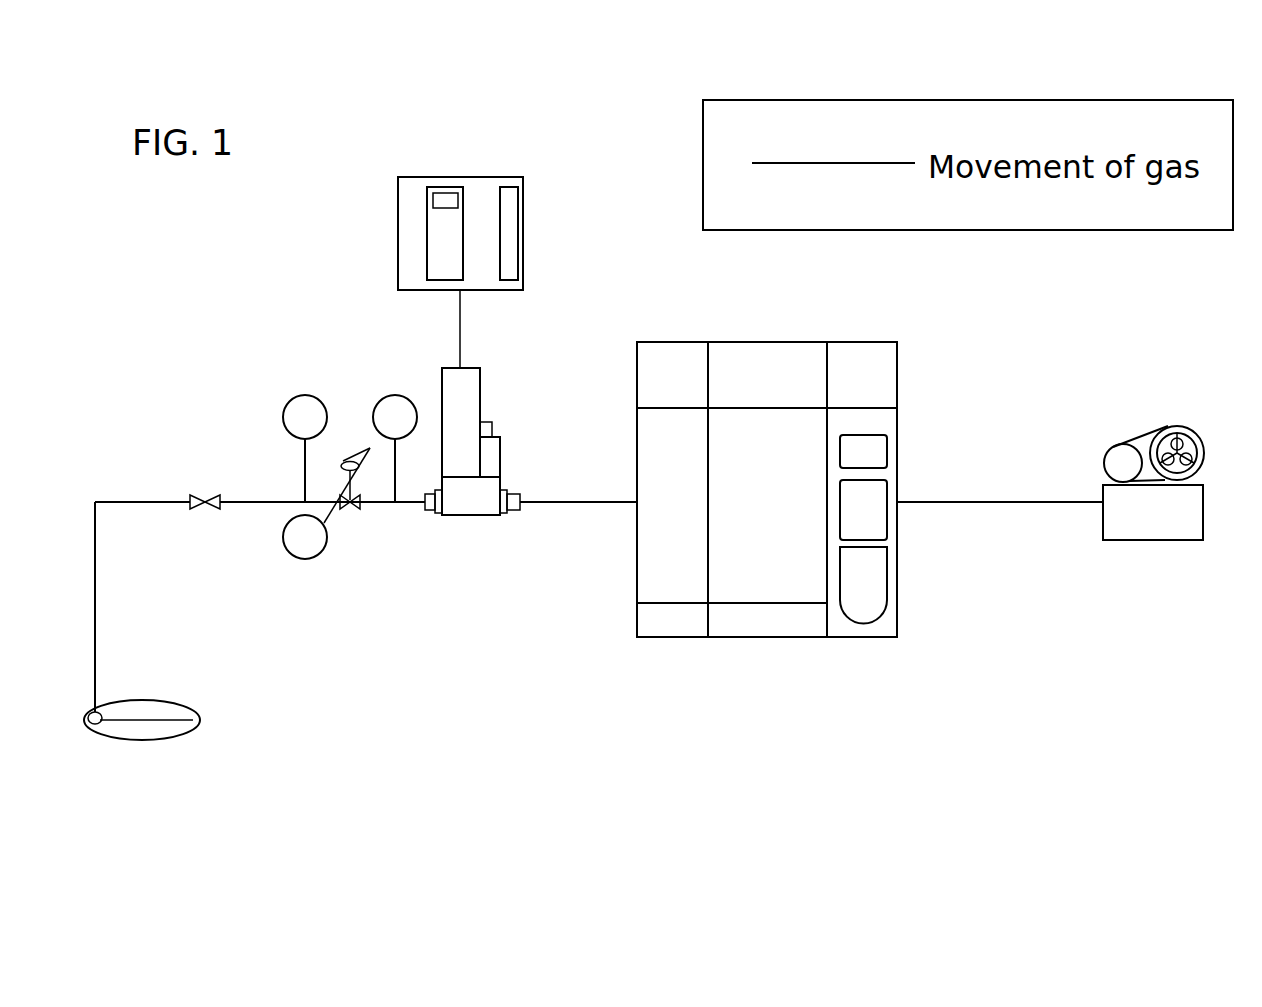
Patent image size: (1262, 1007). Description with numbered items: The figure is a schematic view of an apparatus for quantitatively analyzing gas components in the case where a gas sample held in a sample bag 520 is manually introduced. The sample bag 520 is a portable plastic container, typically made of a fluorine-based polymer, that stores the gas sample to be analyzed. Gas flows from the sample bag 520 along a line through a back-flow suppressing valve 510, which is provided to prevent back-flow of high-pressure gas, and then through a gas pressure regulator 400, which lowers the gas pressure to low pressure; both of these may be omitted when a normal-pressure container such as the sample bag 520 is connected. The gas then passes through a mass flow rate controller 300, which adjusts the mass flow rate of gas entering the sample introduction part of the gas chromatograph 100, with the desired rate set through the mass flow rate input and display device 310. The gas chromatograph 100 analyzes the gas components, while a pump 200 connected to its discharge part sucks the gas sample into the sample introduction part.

The gas chromatograph 100 is at (765, 637).
The pump 200 is at (1152, 540).
The mass flow rate controller 300 is at (468, 517).
The mass flow rate input and display device 310 is at (463, 178).
The gas pressure regulator 400 is at (353, 512).
The back-flow suppressing valve 510 is at (205, 495).
The sample bag 520 is at (198, 712).